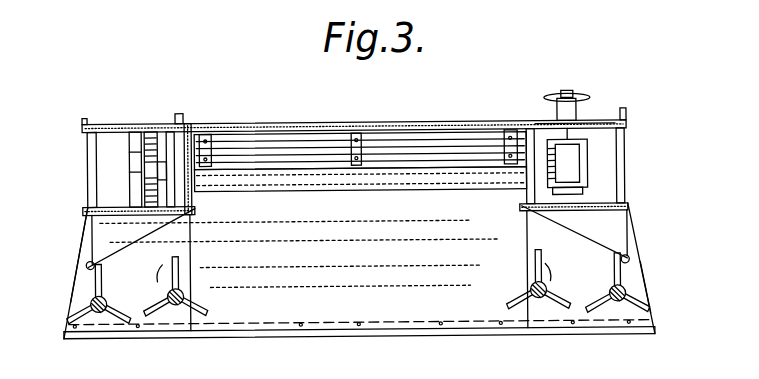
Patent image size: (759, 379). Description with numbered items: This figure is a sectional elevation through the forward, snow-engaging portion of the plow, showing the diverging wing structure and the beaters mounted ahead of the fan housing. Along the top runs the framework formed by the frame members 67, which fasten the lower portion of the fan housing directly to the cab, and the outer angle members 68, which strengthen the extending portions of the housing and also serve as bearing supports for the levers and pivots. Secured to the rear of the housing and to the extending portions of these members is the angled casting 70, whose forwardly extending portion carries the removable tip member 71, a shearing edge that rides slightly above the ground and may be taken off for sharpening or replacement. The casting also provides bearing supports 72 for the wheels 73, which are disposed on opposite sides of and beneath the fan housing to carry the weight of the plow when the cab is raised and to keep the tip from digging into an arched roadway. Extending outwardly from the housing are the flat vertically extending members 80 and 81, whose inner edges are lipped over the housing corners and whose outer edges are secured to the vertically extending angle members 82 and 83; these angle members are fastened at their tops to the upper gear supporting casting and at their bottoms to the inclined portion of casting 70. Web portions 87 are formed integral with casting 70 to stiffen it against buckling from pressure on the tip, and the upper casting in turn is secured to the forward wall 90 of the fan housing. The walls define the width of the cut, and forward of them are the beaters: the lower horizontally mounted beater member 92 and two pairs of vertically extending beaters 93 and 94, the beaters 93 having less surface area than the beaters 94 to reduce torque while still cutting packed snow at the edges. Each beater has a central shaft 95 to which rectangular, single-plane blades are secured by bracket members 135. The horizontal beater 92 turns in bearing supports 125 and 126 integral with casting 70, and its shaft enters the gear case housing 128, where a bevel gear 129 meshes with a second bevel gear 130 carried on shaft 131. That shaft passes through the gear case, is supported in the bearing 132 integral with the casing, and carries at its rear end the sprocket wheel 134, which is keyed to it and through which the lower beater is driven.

The frame members 67 is at (180, 113).
The outer angle members 68 is at (84, 118).
The angled casting 70 is at (405, 330).
The tip member 71 is at (322, 336).
The bearing supports 72 is at (135, 163).
The wheels 73 is at (152, 135).
The flat vertically extending member 80 is at (100, 265).
The flat vertically extending member 81 is at (600, 255).
The vertically extending angle member 82 is at (86, 262).
The vertically extending angle member 83 is at (630, 262).
The web portions 87 is at (91, 226).
The forward wall 90 is at (115, 208).
The lower horizontally mounted beater member 92 is at (325, 186).
The vertically extending beaters 93 is at (80, 292).
The vertically extending beaters 94 is at (168, 315).
The shaft members 95 is at (300, 165).
The bearing support 125 is at (206, 133).
The bearing support 126 is at (512, 140).
The gear case housing 128 is at (590, 165).
The bevel gear 129 is at (490, 191).
The second bevel gear 130 is at (600, 125).
The shaft 131 is at (575, 160).
The bearing 132 is at (585, 190).
The sprocket wheel 134 is at (585, 96).
The bracket members 135 is at (358, 140).